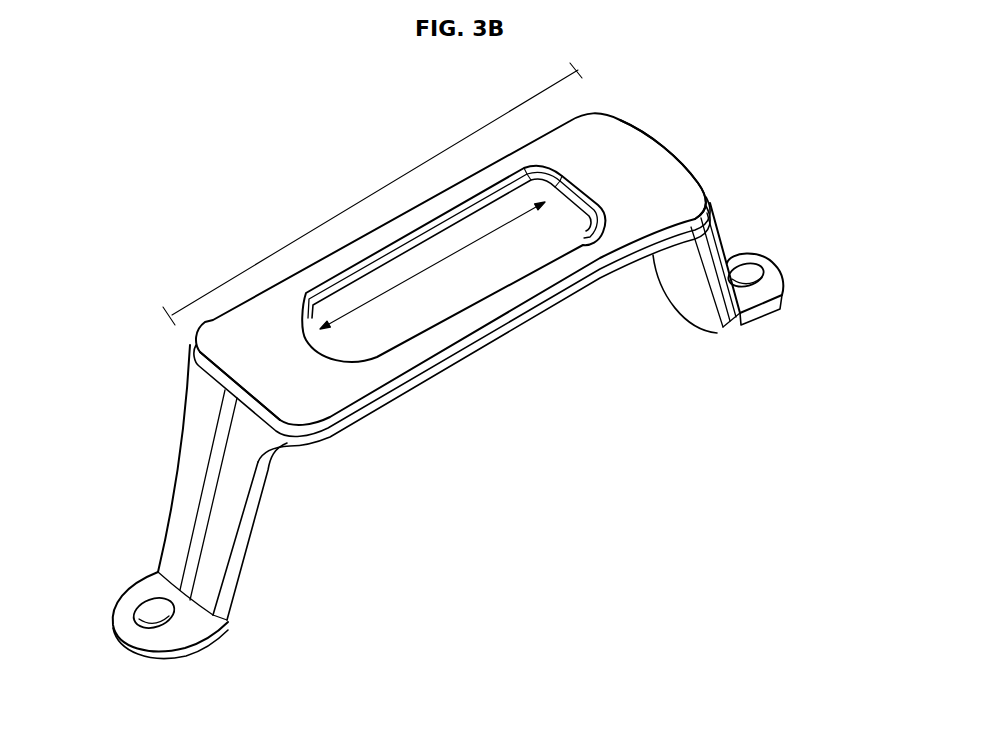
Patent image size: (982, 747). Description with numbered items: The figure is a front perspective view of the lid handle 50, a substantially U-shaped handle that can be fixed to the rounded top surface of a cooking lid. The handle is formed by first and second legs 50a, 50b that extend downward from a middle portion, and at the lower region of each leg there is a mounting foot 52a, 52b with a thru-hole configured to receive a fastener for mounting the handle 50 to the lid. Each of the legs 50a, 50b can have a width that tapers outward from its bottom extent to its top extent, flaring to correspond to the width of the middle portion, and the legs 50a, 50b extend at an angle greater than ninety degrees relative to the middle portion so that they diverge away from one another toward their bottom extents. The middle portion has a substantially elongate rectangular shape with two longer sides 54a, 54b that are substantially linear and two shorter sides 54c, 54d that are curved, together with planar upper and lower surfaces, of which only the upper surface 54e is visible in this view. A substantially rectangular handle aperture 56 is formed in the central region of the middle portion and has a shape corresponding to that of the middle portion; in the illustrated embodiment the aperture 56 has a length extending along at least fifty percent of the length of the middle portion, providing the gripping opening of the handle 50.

The lid handle 50 is at (133, 281).
The first leg 50a is at (200, 463).
The second leg 50b is at (719, 233).
The mounting foot 52a is at (180, 632).
The mounting foot 52b is at (770, 316).
The longer side 54a is at (563, 297).
The longer side 54b is at (612, 150).
The shorter side 54c is at (672, 148).
The shorter side 54d is at (217, 377).
The upper surface 54e is at (335, 390).
The handle aperture 56 is at (477, 270).